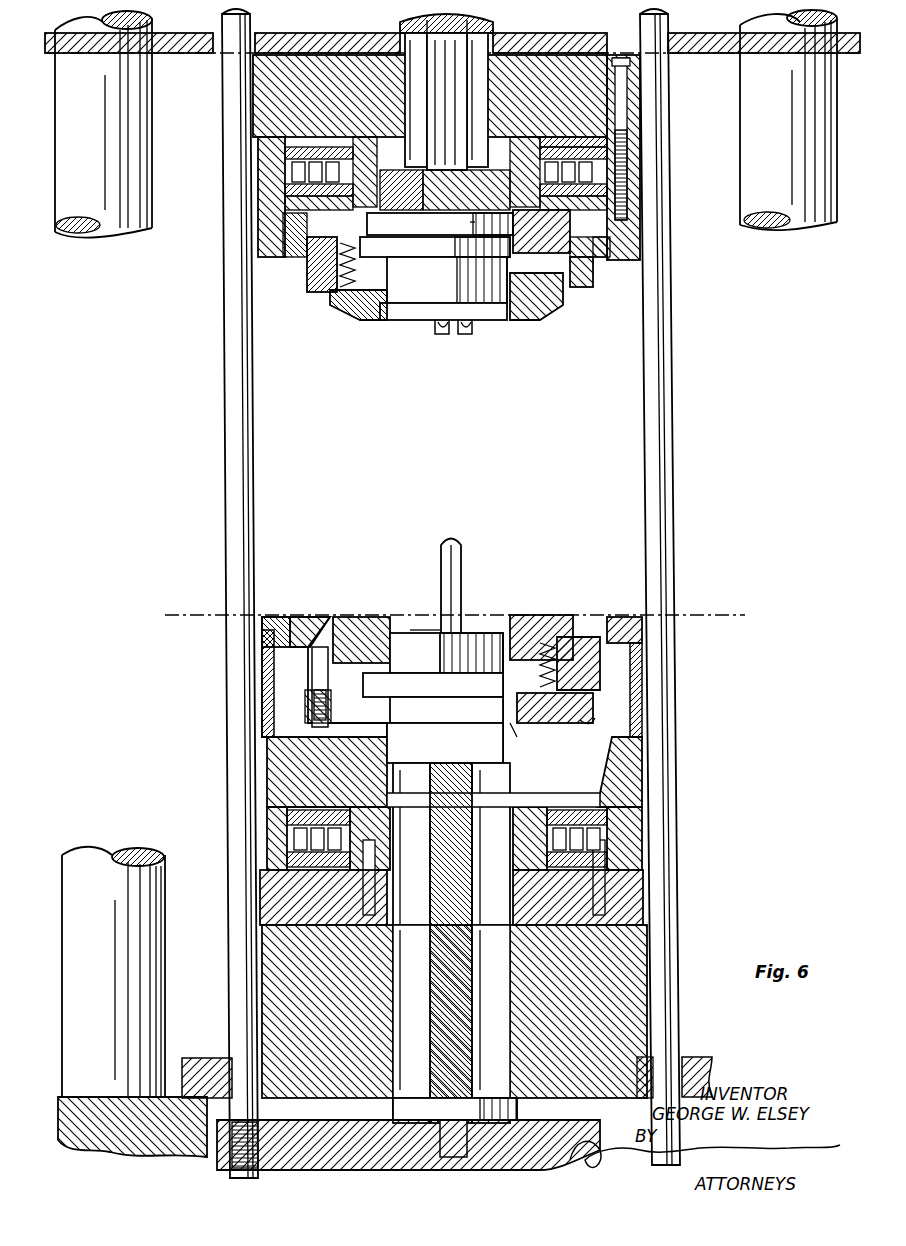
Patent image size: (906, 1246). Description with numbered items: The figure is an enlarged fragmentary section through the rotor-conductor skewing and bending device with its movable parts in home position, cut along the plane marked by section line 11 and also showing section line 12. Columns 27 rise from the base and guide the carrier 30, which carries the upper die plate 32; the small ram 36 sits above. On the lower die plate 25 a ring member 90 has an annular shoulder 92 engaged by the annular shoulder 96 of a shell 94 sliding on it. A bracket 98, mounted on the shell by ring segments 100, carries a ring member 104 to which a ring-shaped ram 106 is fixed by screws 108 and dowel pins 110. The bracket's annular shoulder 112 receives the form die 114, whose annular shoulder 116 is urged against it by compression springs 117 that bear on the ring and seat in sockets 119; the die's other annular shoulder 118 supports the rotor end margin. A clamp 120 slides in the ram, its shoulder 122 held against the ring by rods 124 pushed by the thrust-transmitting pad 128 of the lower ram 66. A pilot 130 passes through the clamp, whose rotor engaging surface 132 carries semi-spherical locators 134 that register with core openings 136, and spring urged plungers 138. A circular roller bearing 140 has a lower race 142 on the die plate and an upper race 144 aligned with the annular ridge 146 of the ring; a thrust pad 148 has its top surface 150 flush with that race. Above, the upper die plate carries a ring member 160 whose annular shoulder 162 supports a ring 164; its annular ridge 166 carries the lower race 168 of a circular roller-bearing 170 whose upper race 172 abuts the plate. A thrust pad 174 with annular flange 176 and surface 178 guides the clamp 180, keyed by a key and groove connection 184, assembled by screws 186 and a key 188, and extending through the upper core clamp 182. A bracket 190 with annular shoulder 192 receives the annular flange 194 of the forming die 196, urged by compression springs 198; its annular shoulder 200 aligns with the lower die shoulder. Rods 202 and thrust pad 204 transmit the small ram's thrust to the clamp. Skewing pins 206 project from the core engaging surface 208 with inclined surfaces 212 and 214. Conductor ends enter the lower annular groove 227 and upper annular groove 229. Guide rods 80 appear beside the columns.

The section line 11 is at (188, 48).
The section line 12 is at (178, 645).
The lower die plate 25 is at (640, 935).
The columns 27 is at (150, 176).
The carrier 30 is at (172, 58).
The upper die plate 32 is at (625, 116).
The small ram 36 is at (400, 24).
The lower ram 66 is at (325, 1165).
The guide rod 80 is at (222, 471).
The ring member 90 is at (265, 795).
The annular shoulder 92 is at (270, 740).
The shell 94 is at (262, 688).
The annular shoulder 96 is at (265, 770).
The bracket 98 is at (302, 643).
The ring segments 100 is at (287, 620).
The ring member 104 is at (590, 708).
The ring-shaped ram 106 is at (455, 660).
The screws 108 is at (378, 693).
The dowel pins 110 is at (518, 726).
The annular shoulder 112 is at (326, 650).
The form die 114 is at (362, 635).
The annular shoulder 116 is at (328, 672).
The compression springs 117 is at (575, 680).
The annular shoulder 118 is at (510, 628).
The sockets 119 is at (578, 657).
The clamp 120 is at (505, 770).
The shoulder 122 is at (392, 725).
The rods 124 is at (490, 785).
The thrust-transmitting pad 128 is at (518, 1110).
The pilot 130 is at (462, 546).
The rotor engaging surface 132 is at (432, 622).
The semi-spherical locators 134 is at (470, 630).
The openings 136 is at (468, 980).
The spring urged plungers 138 is at (420, 628).
The circular roller bearing 140 is at (602, 832).
The lower race 142 is at (605, 862).
The upper race 144 is at (610, 812).
The annular ridge 146 is at (605, 722).
The thrust pad 148 is at (532, 805).
The top surface 150 is at (533, 808).
The ring member 160 is at (630, 224).
The annular shoulder 162 is at (606, 257).
The ring 164 is at (542, 233).
The annular ridge 166 is at (590, 202).
The lower race 168 is at (600, 184).
The circular roller-bearing 170 is at (605, 166).
The upper race 172 is at (612, 149).
The thrust pad 174 is at (622, 132).
The annular flange 176 is at (255, 137).
The surface 178 is at (362, 249).
The clamp 180 is at (462, 240).
The upper core clamp 182 is at (437, 272).
The key and groove connection 184 is at (405, 156).
The screws 186 is at (440, 224).
The key 188 is at (472, 226).
The bracket 190 is at (596, 286).
The annular shoulder 192 is at (566, 290).
The annular flange 194 is at (568, 302).
The forming die 196 is at (556, 318).
The compression springs 198 is at (308, 270).
The annular shoulder 200 is at (515, 322).
The rods 202 is at (430, 100).
The thrust pad 204 is at (492, 24).
The skewing pins 206 is at (446, 336).
The core engaging surface 208 is at (397, 320).
The inclined surface 212 is at (470, 325).
The inclined surface 214 is at (465, 336).
The annular groove 227 is at (512, 640).
The annular groove 229 is at (380, 322).